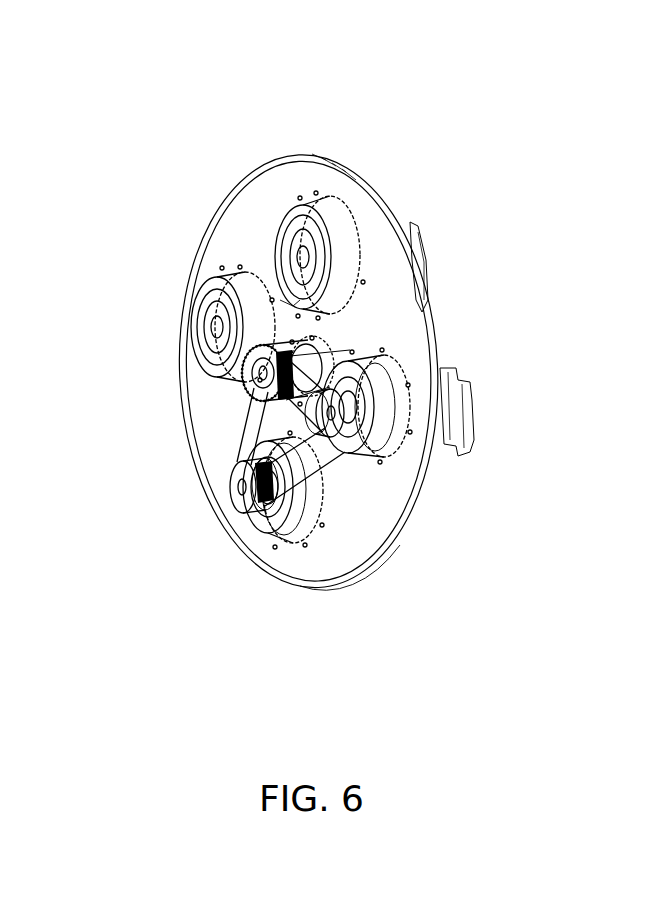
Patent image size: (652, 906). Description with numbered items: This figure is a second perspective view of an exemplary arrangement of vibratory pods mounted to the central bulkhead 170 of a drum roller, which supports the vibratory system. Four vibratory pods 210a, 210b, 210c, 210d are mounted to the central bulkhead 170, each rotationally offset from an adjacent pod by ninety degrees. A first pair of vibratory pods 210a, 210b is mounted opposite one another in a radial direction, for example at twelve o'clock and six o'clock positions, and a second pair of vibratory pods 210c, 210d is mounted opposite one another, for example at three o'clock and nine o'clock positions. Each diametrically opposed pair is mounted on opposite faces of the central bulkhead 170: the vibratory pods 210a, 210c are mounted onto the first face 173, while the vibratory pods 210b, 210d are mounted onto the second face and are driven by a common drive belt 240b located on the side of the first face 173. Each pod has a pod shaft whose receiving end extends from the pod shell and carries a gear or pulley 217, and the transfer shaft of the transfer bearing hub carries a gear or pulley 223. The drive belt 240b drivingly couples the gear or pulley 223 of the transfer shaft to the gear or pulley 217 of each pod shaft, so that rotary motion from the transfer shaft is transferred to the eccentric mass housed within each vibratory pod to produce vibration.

The central bulkhead 170 is at (281, 170).
The first face 173 is at (364, 530).
The vibratory pod 210a is at (348, 236).
The vibratory pod 210b is at (288, 520).
The vibratory pod 210c is at (210, 295).
The vibratory pod 210d is at (393, 452).
The gear or pulley 217 is at (333, 413).
The gear or pulley 223 is at (262, 384).
The drive belt 240b is at (325, 365).